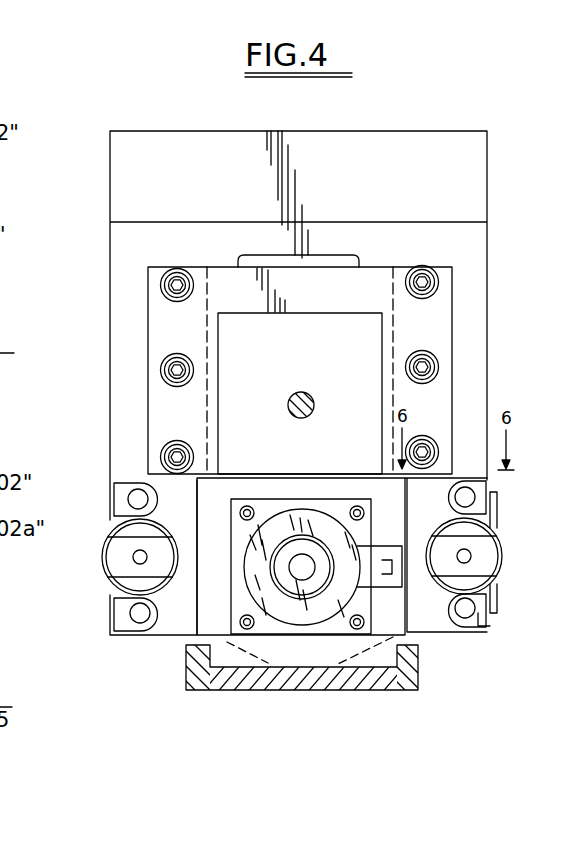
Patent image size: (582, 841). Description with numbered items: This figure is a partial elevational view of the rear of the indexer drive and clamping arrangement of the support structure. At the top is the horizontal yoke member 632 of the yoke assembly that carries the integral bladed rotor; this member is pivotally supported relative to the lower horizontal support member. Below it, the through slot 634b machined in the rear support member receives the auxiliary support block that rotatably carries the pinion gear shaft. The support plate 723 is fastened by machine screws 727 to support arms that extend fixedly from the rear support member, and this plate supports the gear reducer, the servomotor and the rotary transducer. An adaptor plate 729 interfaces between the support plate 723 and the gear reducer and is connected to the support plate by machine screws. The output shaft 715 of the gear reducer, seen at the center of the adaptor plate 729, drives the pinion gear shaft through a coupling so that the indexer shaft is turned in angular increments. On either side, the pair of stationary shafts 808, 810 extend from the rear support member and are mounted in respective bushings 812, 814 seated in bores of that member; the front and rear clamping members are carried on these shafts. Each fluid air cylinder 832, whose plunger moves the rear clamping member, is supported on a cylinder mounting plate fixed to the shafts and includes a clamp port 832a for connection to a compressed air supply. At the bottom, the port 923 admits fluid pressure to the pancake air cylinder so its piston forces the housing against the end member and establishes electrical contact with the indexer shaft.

The horizontal yoke member 632 is at (387, 137).
The through slot 634b is at (330, 257).
The support plate 723 is at (438, 303).
The machine screws 727 is at (166, 363).
The adaptor plate 729 is at (325, 316).
The output shaft 715 is at (306, 394).
The stationary shaft 808 is at (135, 497).
The stationary shaft 810 is at (133, 621).
The bushing 812 is at (478, 490).
The bushing 814 is at (476, 625).
The fluid air cylinder 832 is at (107, 554).
The clamp port 832a is at (136, 560).
The port 923 is at (393, 588).